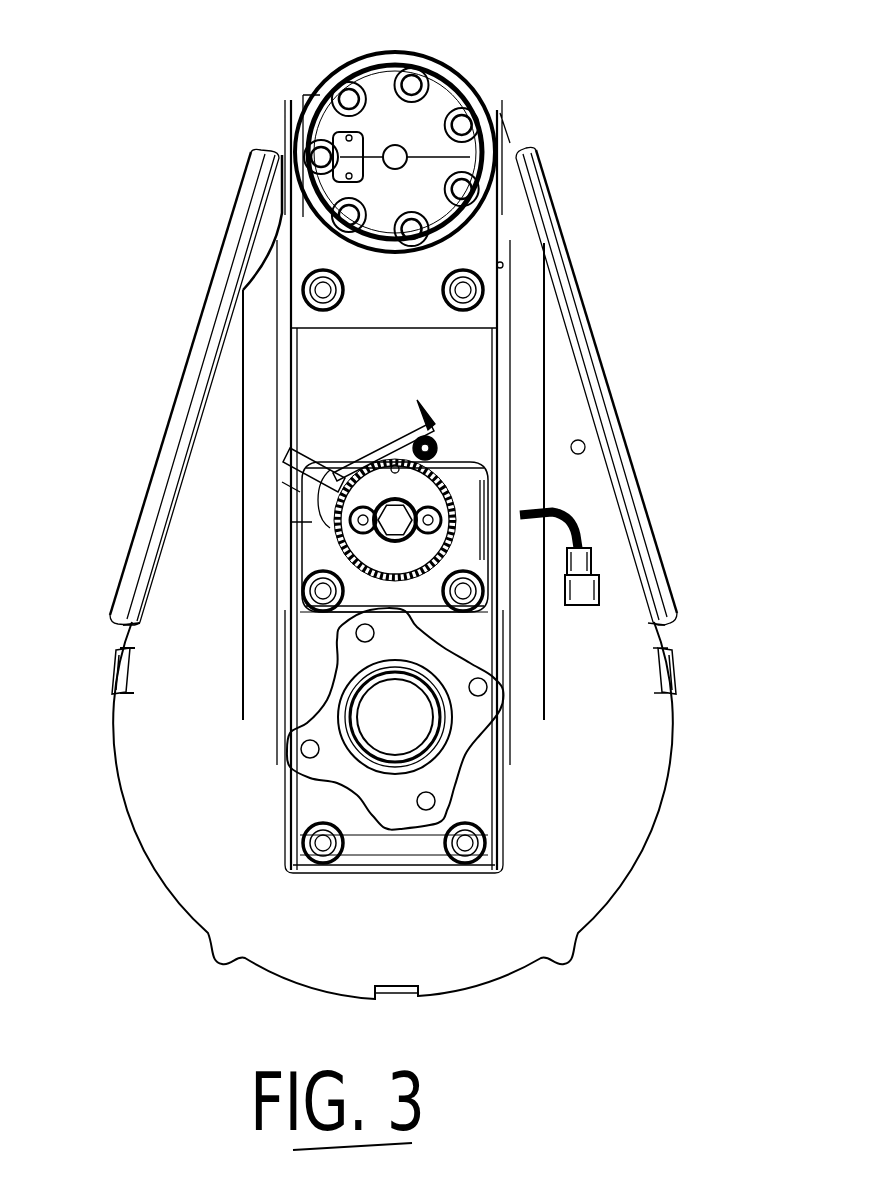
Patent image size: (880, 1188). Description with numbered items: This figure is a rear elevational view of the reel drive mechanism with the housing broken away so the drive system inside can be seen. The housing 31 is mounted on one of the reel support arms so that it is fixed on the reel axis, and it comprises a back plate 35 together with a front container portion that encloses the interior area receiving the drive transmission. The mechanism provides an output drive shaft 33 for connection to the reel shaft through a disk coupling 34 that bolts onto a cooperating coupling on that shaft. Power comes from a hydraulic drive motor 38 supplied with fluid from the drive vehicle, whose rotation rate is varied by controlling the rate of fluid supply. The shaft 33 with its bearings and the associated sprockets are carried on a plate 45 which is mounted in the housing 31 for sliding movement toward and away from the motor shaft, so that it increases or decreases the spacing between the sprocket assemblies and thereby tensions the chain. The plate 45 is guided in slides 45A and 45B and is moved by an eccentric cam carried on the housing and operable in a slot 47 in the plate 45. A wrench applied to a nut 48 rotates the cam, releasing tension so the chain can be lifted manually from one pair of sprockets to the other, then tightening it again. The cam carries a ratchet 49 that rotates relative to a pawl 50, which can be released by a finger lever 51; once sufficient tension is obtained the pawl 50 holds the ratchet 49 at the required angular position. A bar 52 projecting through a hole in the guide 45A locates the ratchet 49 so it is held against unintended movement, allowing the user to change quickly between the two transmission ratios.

The housing 31 is at (648, 778).
The output drive shaft 33 is at (397, 727).
The disk coupling 34 is at (460, 717).
The back plate 35 is at (602, 870).
The hydraulic drive motor 38 is at (432, 108).
The plate 45 is at (320, 672).
The slide 45A is at (283, 617).
The slide 45B is at (505, 378).
The slot 47 is at (97, 653).
The nut 48 is at (405, 512).
The ratchet 49 is at (430, 547).
The pawl 50 is at (381, 413).
The finger lever 51 is at (441, 384).
The bar 52 is at (290, 482).